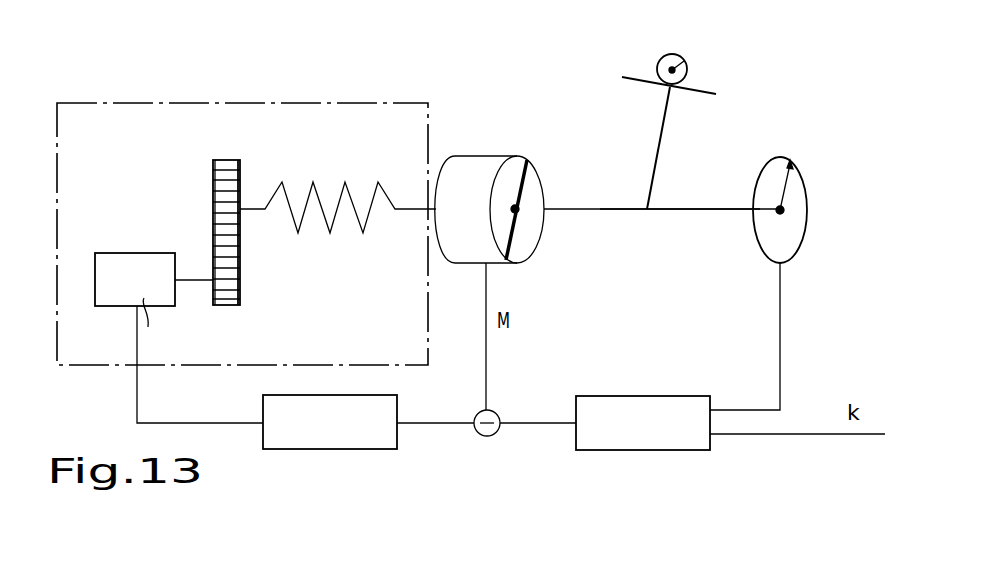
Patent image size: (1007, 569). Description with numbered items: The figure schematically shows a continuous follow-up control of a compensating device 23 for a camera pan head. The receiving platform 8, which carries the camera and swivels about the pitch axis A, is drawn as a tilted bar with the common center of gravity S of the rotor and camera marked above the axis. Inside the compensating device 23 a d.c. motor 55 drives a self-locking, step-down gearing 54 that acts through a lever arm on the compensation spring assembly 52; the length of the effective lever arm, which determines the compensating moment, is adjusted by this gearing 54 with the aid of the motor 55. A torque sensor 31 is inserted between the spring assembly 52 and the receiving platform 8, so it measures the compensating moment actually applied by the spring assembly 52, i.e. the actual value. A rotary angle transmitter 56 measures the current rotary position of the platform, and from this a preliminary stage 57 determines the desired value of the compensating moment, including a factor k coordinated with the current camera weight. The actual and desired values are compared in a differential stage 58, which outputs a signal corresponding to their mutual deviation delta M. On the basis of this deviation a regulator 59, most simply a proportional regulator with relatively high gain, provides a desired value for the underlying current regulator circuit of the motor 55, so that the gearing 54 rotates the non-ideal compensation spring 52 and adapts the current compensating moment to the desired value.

The receiving platform 8 is at (630, 77).
The compensating device 23 is at (405, 100).
The torque sensor 31 is at (472, 156).
The compensation spring assembly 52 is at (359, 220).
The self-locking gearing 54 is at (196, 190).
The d.c. motor 55 is at (107, 253).
The rotary angle transmitter 56 is at (805, 185).
The preliminary stage 57 is at (688, 396).
The differential stage 58 is at (473, 434).
The regulator 59 is at (376, 396).
The common center of gravity S is at (687, 61).
The pitch axis A is at (683, 212).